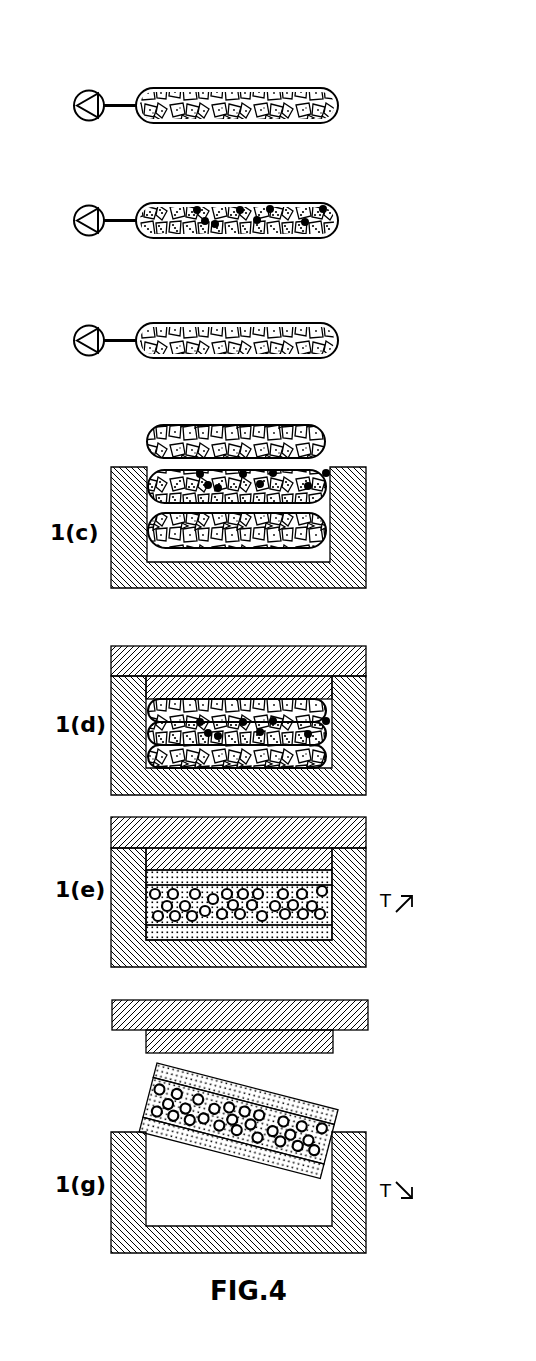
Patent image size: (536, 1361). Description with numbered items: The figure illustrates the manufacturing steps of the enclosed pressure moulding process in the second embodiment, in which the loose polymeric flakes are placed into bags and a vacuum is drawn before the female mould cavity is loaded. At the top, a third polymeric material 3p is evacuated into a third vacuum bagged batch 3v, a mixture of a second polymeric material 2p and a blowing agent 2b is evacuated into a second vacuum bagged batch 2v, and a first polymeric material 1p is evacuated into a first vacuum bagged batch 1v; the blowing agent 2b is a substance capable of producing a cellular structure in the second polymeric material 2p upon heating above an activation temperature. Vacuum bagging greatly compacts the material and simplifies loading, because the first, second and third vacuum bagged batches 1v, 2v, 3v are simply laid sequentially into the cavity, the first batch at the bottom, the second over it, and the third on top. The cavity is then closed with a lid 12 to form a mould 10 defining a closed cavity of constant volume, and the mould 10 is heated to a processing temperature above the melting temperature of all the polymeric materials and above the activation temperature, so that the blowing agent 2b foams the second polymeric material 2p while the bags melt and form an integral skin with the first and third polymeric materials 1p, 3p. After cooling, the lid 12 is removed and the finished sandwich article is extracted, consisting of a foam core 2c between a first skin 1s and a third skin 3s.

The third polymeric material 3p is at (172, 102).
The third vacuum bagged batch 3v is at (331, 84).
The second polymeric material 2p is at (197, 210).
The blowing agent 2b is at (260, 221).
The second vacuum bagged batch 2v is at (327, 200).
The first polymeric material 1p is at (193, 343).
The first vacuum bagged batch 1v is at (330, 317).
The mould 10 is at (383, 675).
The lid 12 is at (333, 1033).
The third skin 3s is at (155, 1067).
The core 2c is at (148, 1087).
The first skin 1s is at (140, 1118).